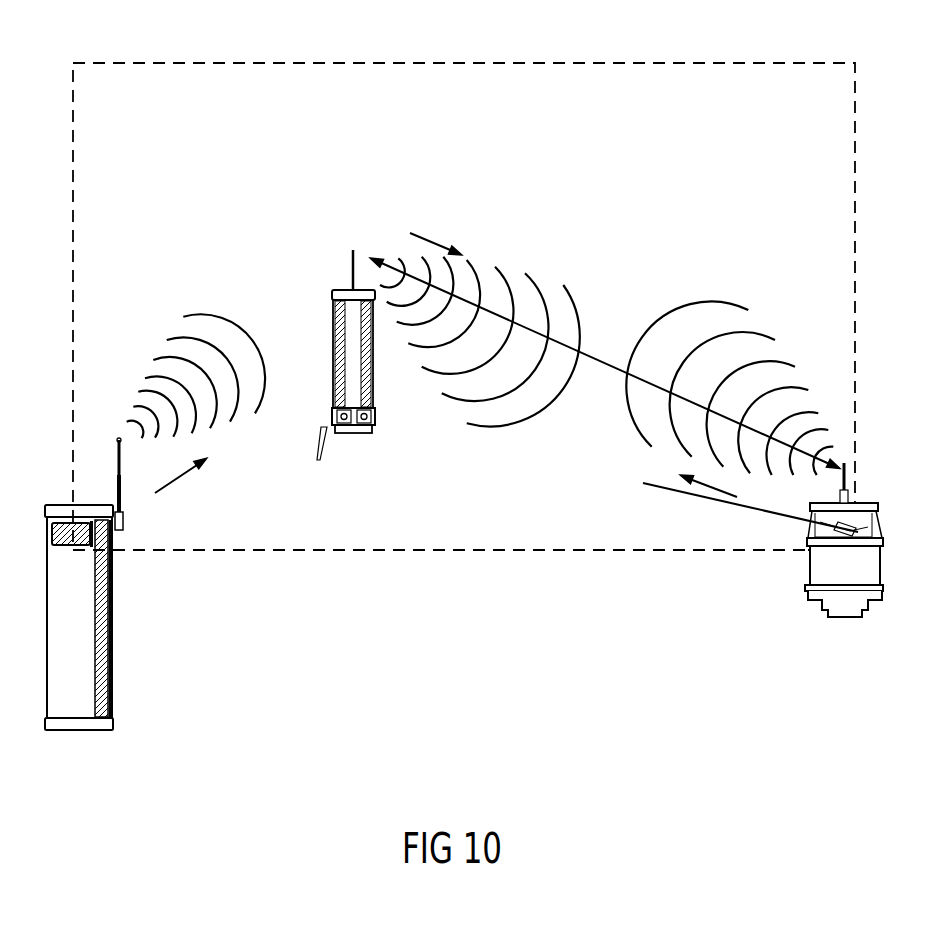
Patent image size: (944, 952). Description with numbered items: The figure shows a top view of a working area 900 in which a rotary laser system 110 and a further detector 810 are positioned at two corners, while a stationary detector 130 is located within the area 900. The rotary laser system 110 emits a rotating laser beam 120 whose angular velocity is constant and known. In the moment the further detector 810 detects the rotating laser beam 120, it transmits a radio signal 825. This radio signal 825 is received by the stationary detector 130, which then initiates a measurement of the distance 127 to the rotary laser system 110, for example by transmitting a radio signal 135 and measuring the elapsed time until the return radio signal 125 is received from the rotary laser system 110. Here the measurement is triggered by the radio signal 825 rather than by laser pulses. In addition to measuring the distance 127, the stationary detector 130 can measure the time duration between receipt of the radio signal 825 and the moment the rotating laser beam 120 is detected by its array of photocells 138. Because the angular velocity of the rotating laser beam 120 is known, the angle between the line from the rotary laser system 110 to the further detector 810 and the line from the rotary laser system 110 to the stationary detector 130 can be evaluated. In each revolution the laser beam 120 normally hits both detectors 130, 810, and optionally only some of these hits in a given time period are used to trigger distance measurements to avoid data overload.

The area 900 is at (553, 85).
The further detector 810 is at (99, 738).
The radio signal 825 is at (170, 488).
The stationary detector 130 is at (320, 292).
The array of photocells 138 is at (375, 398).
The radio signal 135 is at (437, 246).
The distance 127 is at (601, 355).
The rotating laser beam 120 is at (743, 507).
The return radio signal 125 is at (717, 488).
The rotary laser system 110 is at (798, 608).